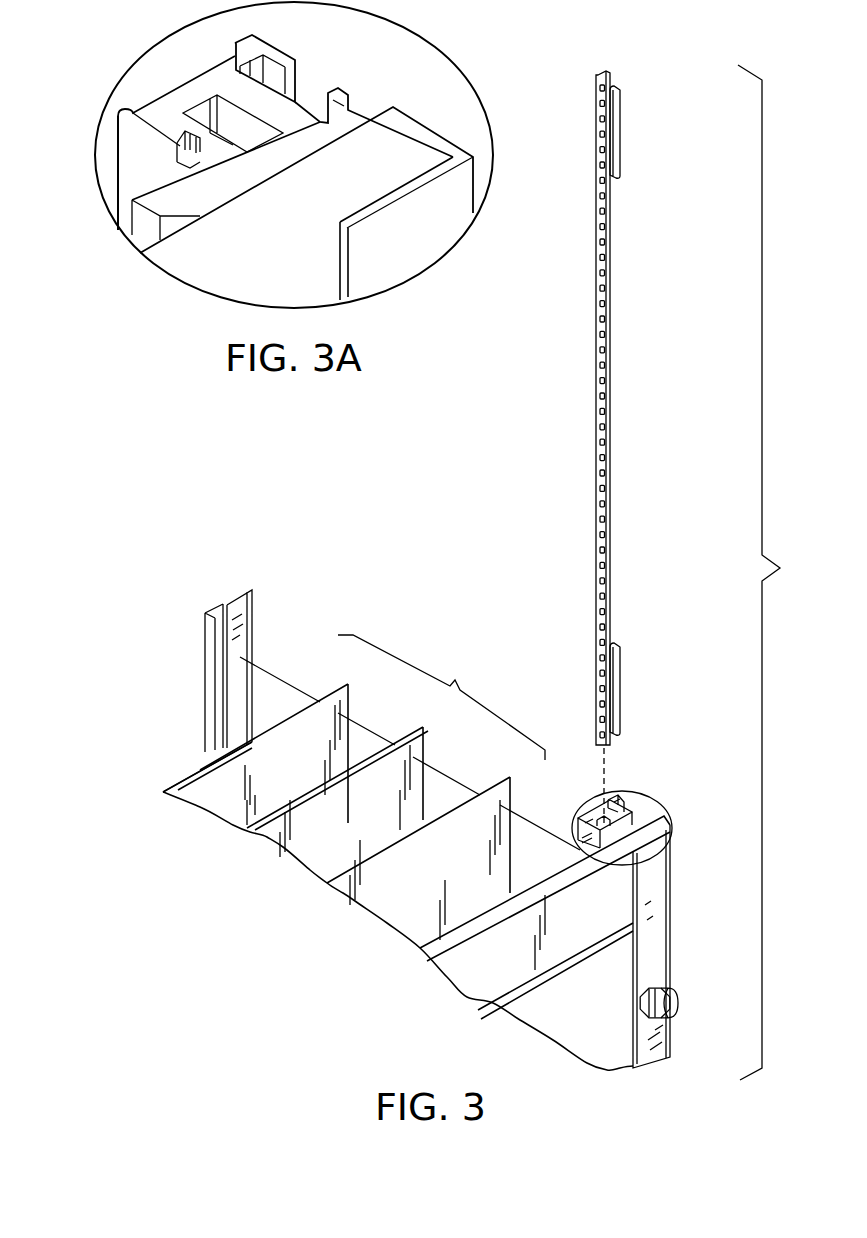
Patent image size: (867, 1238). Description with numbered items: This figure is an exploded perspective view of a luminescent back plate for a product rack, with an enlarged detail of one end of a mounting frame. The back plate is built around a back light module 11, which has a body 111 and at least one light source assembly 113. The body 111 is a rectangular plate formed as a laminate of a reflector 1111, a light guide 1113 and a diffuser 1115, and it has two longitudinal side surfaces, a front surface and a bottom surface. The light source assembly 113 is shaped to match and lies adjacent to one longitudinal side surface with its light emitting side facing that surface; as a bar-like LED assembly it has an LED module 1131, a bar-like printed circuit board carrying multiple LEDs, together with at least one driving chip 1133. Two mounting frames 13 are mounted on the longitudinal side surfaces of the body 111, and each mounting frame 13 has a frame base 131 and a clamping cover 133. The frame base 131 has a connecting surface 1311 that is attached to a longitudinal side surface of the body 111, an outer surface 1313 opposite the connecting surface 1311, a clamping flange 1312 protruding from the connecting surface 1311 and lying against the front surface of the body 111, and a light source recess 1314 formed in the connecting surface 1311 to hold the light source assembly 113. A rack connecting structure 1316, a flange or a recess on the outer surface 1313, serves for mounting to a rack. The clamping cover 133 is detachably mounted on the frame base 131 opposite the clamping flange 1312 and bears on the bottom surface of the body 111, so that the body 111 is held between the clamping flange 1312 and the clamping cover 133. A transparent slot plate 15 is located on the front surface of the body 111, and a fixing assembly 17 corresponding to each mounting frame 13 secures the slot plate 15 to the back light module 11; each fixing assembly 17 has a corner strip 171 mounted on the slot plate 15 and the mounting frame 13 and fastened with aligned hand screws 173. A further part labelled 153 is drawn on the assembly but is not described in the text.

In FIG. 3, the back light module 11 is at (452, 614).
In FIG. 3, the body 111 is at (441, 697).
In FIG. 3, the reflector 1111 is at (200, 797).
In FIG. 3, the light guide 1113 is at (287, 836).
In FIG. 3, the diffuser 1115 is at (380, 890).
In FIG. 3, the light source assembly 113 is at (606, 442).
In FIG. 3, the LED module 1131 is at (607, 402).
In FIG. 3, the driving chip 1133 is at (618, 158).
In FIG. 3, the mounting frame 13 is at (586, 813).
In FIG. 3, the frame base 131 is at (586, 839).
In FIG. 3A, the connecting surface 1311 is at (140, 160).
In FIG. 3, the clamping flange 1312 is at (590, 840).
In FIG. 3A, the outer surface 1313 is at (285, 57).
In FIG. 3, the light source recess 1314 is at (606, 823).
In FIG. 3, the rack connecting structure 1316 is at (628, 810).
In FIG. 3, the clamping cover 133 is at (233, 600).
In FIG. 3, the slot plate 15 is at (650, 828).
In FIG. 3, the bottom rail 153 is at (500, 1005).
In FIG. 3, the fixing assembly 17 is at (692, 946).
In FIG. 3, the corner strip 171 is at (660, 972).
In FIG. 3, the hand screw 173 is at (672, 1008).